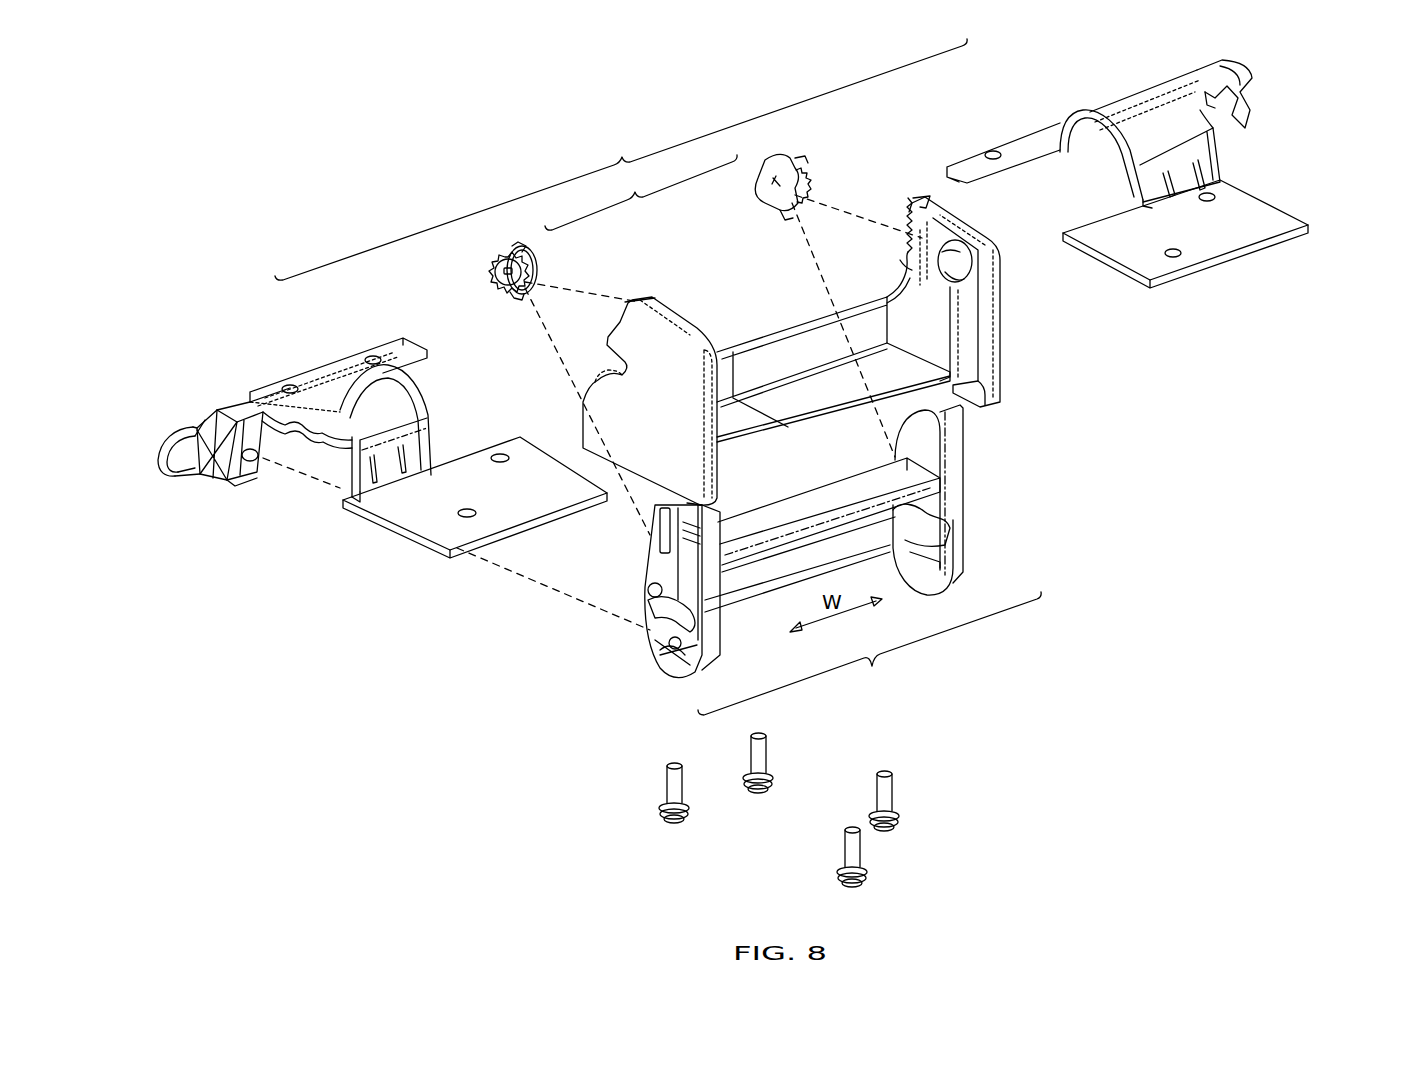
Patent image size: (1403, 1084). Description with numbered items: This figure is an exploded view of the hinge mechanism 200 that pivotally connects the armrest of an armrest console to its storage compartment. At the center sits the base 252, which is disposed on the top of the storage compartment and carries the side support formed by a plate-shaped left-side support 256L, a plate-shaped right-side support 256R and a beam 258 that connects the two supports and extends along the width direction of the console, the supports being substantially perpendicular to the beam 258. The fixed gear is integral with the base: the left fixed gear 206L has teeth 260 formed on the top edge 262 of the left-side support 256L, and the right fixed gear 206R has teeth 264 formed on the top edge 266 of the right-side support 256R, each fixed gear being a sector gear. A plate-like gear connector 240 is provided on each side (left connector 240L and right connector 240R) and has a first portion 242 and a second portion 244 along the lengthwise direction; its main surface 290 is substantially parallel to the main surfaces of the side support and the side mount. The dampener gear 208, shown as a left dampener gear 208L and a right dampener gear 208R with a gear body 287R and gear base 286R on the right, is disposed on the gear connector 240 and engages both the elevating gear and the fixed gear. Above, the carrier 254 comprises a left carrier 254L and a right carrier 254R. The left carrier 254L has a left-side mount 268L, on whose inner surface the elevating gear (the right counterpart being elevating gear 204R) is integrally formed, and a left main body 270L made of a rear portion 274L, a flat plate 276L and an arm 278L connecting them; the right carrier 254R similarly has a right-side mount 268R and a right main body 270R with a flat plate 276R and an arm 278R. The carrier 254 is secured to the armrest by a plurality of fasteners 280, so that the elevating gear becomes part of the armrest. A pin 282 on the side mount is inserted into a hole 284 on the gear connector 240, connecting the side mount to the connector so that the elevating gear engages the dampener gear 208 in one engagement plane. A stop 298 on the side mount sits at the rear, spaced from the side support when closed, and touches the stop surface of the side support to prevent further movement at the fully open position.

The hinge mechanism 200 is at (1300, 70).
The right side frame 204R is at (634, 379).
The left fixed gear 206L is at (638, 298).
The right fixed gear 206R is at (930, 200).
The dampener gear 208 is at (641, 192).
The left gear 208L is at (536, 262).
The right gear 208R is at (765, 167).
The gear connector 240 is at (869, 653).
The left base foot 240L is at (694, 605).
The right base foot 240R is at (970, 518).
The first portion 242 is at (667, 668).
The second portion 244 is at (656, 583).
The base 252 is at (1006, 350).
The carrier 254 is at (621, 159).
The left carrier 254L is at (323, 364).
The right carrier 254R is at (1048, 120).
The left-side support 256L is at (672, 322).
The right-side support 256R is at (948, 213).
The beam 258 is at (802, 397).
The teeth 260 is at (897, 228).
The top edge 262 is at (612, 325).
The teeth 264 is at (897, 207).
The top edge 266 is at (900, 256).
The left-side mount 268L is at (175, 447).
The right hook 268R is at (1250, 95).
The left main body 270L is at (361, 481).
The right main body 270R is at (1218, 154).
The rear portion 274L is at (277, 387).
The flat plate 276L is at (525, 498).
The flat plate 276R is at (1225, 248).
The arm 278L is at (418, 418).
The arm 278R is at (1143, 173).
The fasteners 280 is at (905, 843).
The pin 282 is at (259, 457).
The hole 284 is at (661, 654).
The gear teeth 286R is at (800, 182).
The pin 287R is at (780, 172).
The main surface 290 is at (917, 585).
The stop 298 is at (945, 313).